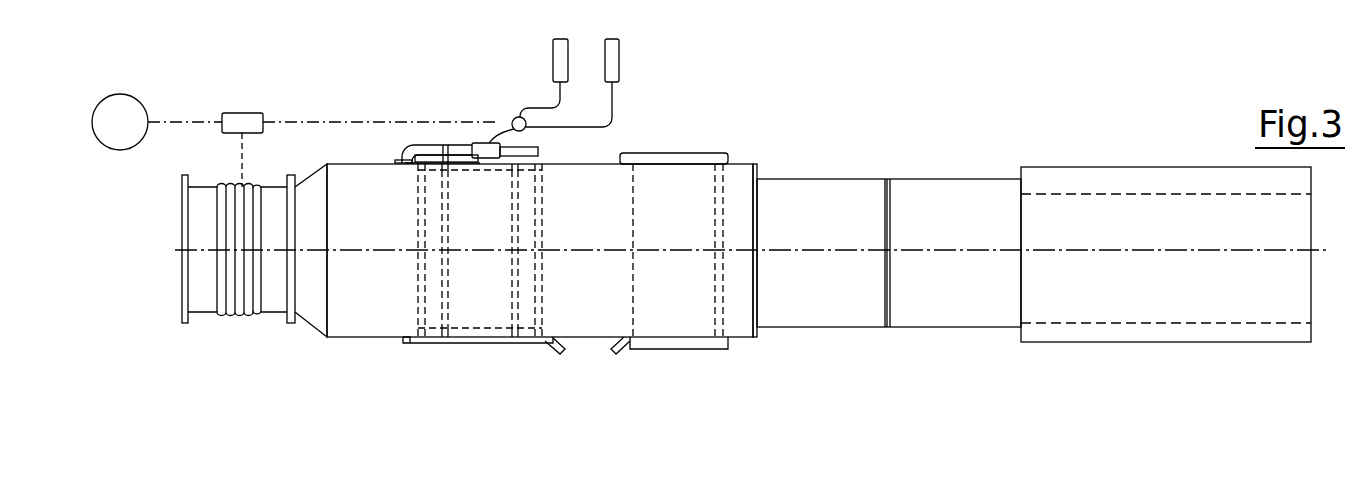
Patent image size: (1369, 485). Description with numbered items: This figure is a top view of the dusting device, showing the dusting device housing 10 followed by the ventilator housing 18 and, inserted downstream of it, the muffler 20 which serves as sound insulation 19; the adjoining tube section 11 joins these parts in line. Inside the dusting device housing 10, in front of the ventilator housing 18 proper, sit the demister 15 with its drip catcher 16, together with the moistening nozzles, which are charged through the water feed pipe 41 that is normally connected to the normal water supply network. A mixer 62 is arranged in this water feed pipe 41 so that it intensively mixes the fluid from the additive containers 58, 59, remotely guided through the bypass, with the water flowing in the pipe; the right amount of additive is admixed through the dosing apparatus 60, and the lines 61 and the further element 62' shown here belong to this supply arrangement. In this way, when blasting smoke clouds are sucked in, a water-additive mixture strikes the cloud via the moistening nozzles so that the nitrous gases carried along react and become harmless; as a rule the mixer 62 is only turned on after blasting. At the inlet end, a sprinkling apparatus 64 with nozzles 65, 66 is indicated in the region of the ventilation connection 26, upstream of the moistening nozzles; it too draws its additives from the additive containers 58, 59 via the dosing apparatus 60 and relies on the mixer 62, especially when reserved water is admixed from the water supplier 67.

The dusting device housing 10 is at (592, 340).
The tube 11 is at (889, 301).
The demister 15 is at (480, 308).
The drip catcher 16 is at (700, 330).
The ventilator housing 18 is at (963, 312).
The sound insulation 19 is at (1166, 295).
The muffler 20 is at (1150, 323).
The ventilation connection 26 is at (240, 280).
The water feed pipe 41 is at (458, 148).
The additive container 58 is at (612, 55).
The additive container 59 is at (560, 55).
The dosing apparatus 60 is at (527, 120).
The wire 61 is at (493, 137).
The mixer 62 is at (490, 96).
The sensor 62' is at (258, 111).
The sprinkling apparatus 64 is at (176, 167).
The nozzle 65 is at (176, 167).
The nozzle 66 is at (243, 233).
The water supplier 67 is at (113, 137).